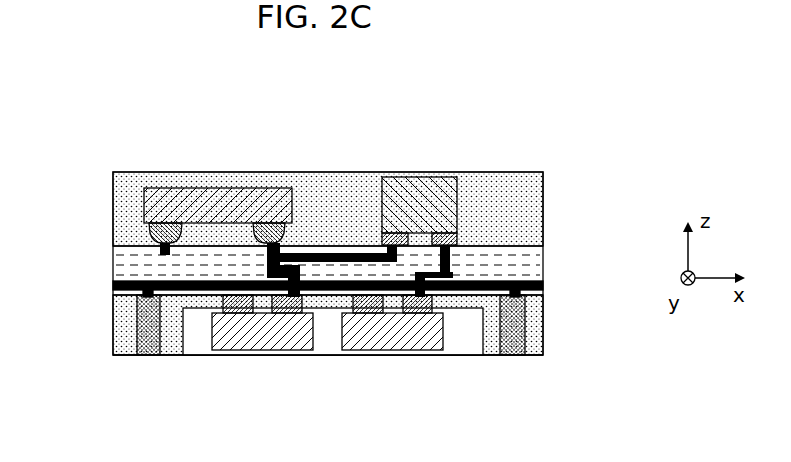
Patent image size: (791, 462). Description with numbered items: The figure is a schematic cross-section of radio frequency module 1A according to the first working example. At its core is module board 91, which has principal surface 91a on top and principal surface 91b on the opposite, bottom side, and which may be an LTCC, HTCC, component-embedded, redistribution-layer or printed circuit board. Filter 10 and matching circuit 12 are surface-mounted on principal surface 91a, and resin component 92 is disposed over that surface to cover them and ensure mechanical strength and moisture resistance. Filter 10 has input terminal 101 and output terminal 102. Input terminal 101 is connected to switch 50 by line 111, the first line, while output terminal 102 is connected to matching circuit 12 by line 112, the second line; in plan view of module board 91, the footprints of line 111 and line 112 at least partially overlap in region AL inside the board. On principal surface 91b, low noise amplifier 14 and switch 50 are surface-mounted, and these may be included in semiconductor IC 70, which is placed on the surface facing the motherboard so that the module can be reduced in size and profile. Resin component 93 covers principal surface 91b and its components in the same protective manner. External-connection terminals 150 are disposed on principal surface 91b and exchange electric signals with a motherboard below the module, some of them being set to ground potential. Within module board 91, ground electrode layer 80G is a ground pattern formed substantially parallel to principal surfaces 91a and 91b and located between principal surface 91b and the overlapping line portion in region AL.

The radio frequency module 1A is at (600, 163).
The filter 10 is at (215, 203).
The input terminal 101 is at (268, 223).
The output terminal 102 is at (160, 225).
The line 111 is at (303, 243).
The line 112 is at (160, 248).
The region AL is at (317, 245).
The matching circuit 12 is at (436, 190).
The low noise amplifier 14 is at (377, 357).
The switch 50 is at (262, 355).
The semiconductor IC 70 is at (327, 357).
The ground electrode layer 80G is at (113, 286).
The module board 91 is at (543, 258).
The principal surface 91a is at (543, 240).
The principal surface 91b is at (543, 310).
The resin component 92 is at (543, 198).
The resin component 93 is at (543, 338).
The external-connection terminal 150 is at (143, 357).